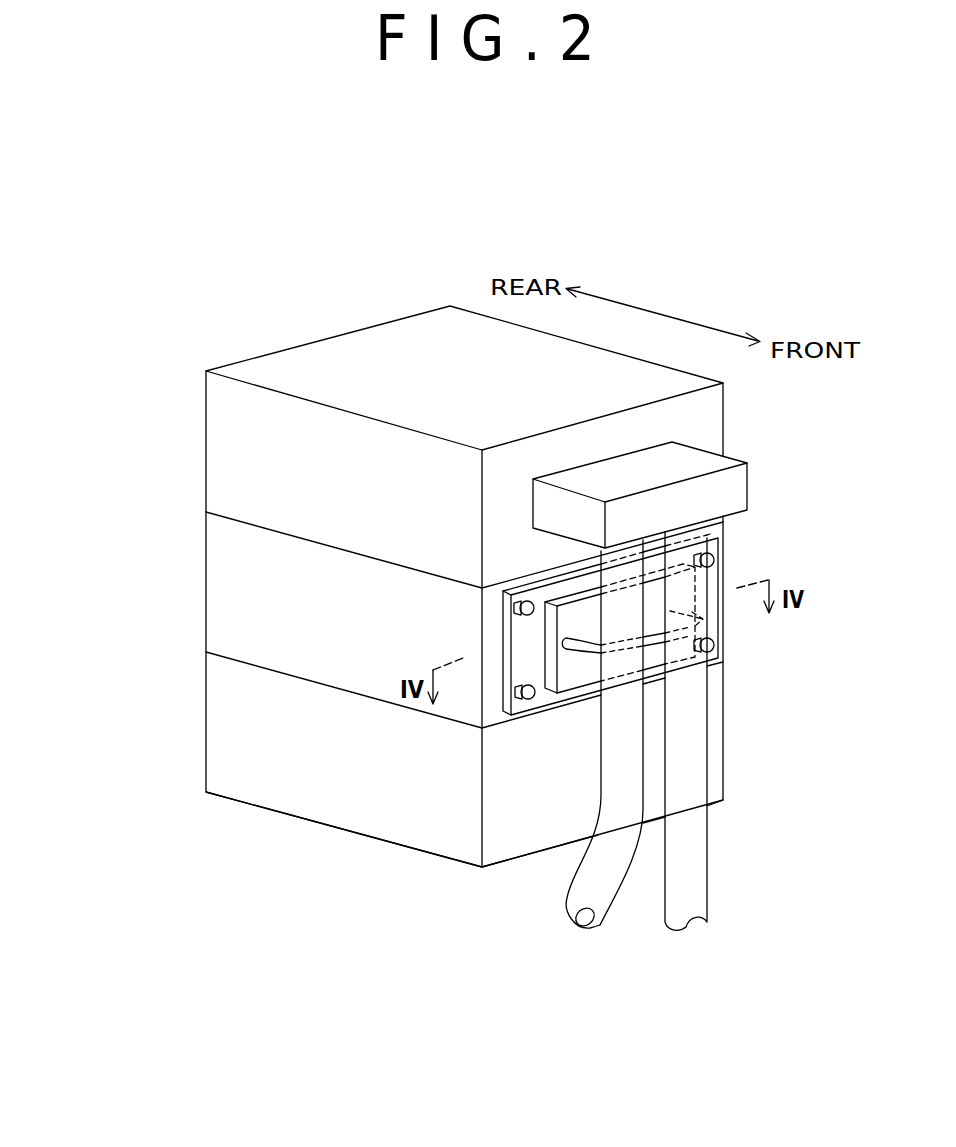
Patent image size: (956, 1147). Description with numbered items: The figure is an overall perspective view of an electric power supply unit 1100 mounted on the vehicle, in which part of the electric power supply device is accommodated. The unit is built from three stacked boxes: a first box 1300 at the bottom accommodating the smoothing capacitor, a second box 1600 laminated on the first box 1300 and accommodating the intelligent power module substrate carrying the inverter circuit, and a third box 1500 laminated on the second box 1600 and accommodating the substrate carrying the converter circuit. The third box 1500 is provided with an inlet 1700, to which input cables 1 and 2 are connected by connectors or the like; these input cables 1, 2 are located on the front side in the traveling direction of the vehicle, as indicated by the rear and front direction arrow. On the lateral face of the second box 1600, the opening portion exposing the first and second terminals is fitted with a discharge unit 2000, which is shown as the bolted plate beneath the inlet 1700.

The electric power supply unit 1100 is at (214, 851).
The third box 1500 is at (232, 443).
The second box 1600 is at (232, 583).
The first box 1300 is at (232, 723).
The inlet 1700 is at (685, 463).
The discharge unit 2000 is at (737, 563).
The input cable 1 is at (593, 878).
The input cable 2 is at (697, 877).